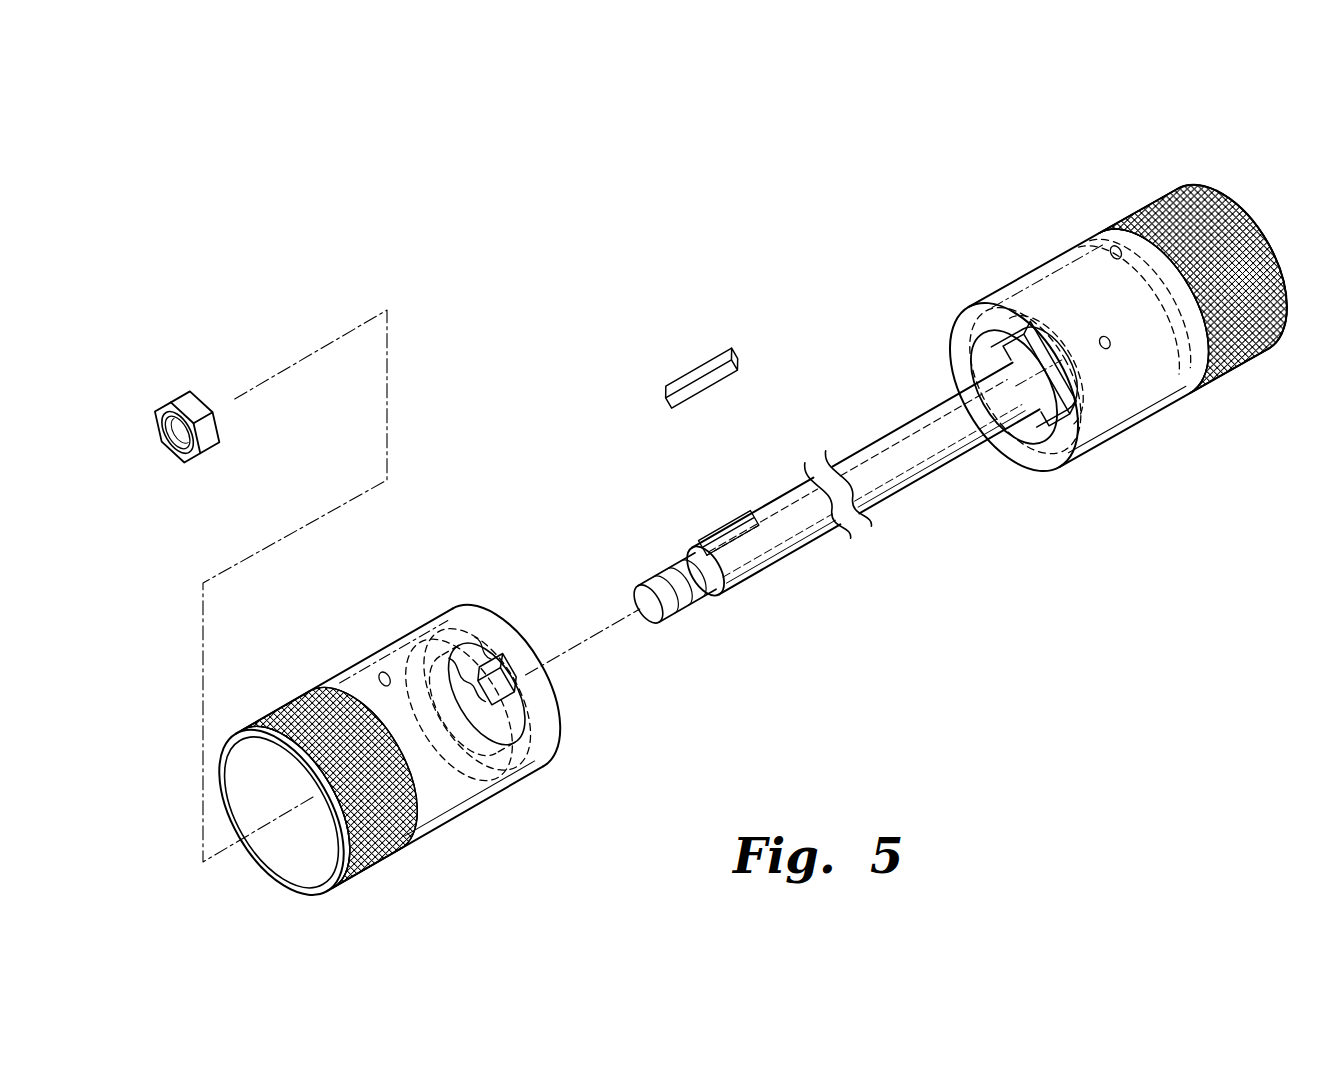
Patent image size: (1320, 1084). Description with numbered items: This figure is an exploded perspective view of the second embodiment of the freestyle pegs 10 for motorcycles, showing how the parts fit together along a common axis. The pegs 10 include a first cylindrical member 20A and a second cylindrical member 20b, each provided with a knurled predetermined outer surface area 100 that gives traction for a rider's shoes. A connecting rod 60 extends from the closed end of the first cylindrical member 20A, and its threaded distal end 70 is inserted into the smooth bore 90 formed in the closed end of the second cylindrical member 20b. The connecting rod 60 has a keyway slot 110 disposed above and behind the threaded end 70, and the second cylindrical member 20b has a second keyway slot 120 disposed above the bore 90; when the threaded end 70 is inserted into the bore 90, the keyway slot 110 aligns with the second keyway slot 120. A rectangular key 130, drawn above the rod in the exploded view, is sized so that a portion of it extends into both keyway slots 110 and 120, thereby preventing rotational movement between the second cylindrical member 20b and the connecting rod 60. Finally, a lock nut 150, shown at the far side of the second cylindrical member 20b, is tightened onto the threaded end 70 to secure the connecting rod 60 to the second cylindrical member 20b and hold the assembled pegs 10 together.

The freestyle pegs 10 is at (760, 228).
The first cylindrical member 20A is at (1044, 262).
The second cylindrical member 20b is at (357, 660).
The connecting rod 60 is at (982, 452).
The threaded distal end 70 is at (670, 622).
The bore 90 is at (505, 692).
The knurled outer surface area 100 is at (1198, 428).
The keyway slot 110 is at (690, 530).
The second keyway slot 120 is at (520, 660).
The rectangular key 130 is at (705, 528).
The lock nut 150 is at (170, 395).